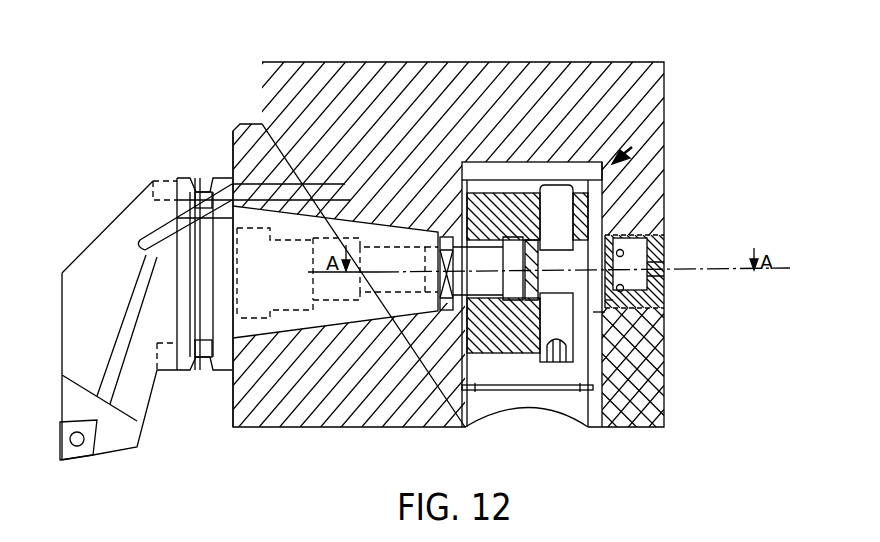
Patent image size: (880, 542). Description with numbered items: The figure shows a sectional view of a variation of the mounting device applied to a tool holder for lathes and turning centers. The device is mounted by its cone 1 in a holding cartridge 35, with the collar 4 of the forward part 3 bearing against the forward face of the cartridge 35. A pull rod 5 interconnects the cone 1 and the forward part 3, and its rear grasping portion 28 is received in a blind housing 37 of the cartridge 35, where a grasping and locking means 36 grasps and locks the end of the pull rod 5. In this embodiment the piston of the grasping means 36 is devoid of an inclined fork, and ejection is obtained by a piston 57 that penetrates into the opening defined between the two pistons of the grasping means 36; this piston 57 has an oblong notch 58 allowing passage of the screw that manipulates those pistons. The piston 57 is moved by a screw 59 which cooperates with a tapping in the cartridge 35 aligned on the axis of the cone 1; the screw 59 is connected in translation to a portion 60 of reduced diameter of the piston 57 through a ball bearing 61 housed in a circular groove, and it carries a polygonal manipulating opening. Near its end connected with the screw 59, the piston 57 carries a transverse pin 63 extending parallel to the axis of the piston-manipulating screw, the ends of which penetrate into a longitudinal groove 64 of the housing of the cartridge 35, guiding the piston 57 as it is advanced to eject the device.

The cone 1 is at (257, 330).
The forward part 3 is at (110, 243).
The collar 4 is at (217, 182).
The pull rod 5 is at (440, 313).
The grasping portion 28 is at (447, 303).
The holding cartridge 35 is at (284, 76).
The grasping and locking means 36 is at (660, 127).
The blind housing 37 is at (575, 170).
The piston 57 is at (648, 210).
The oblong notch 58 is at (603, 340).
The screw 59 is at (650, 228).
The portion of reduced diameter 60 is at (668, 233).
The ball bearing 61 is at (612, 290).
The transverse pin 63 is at (603, 312).
The longitudinal groove 64 is at (597, 325).